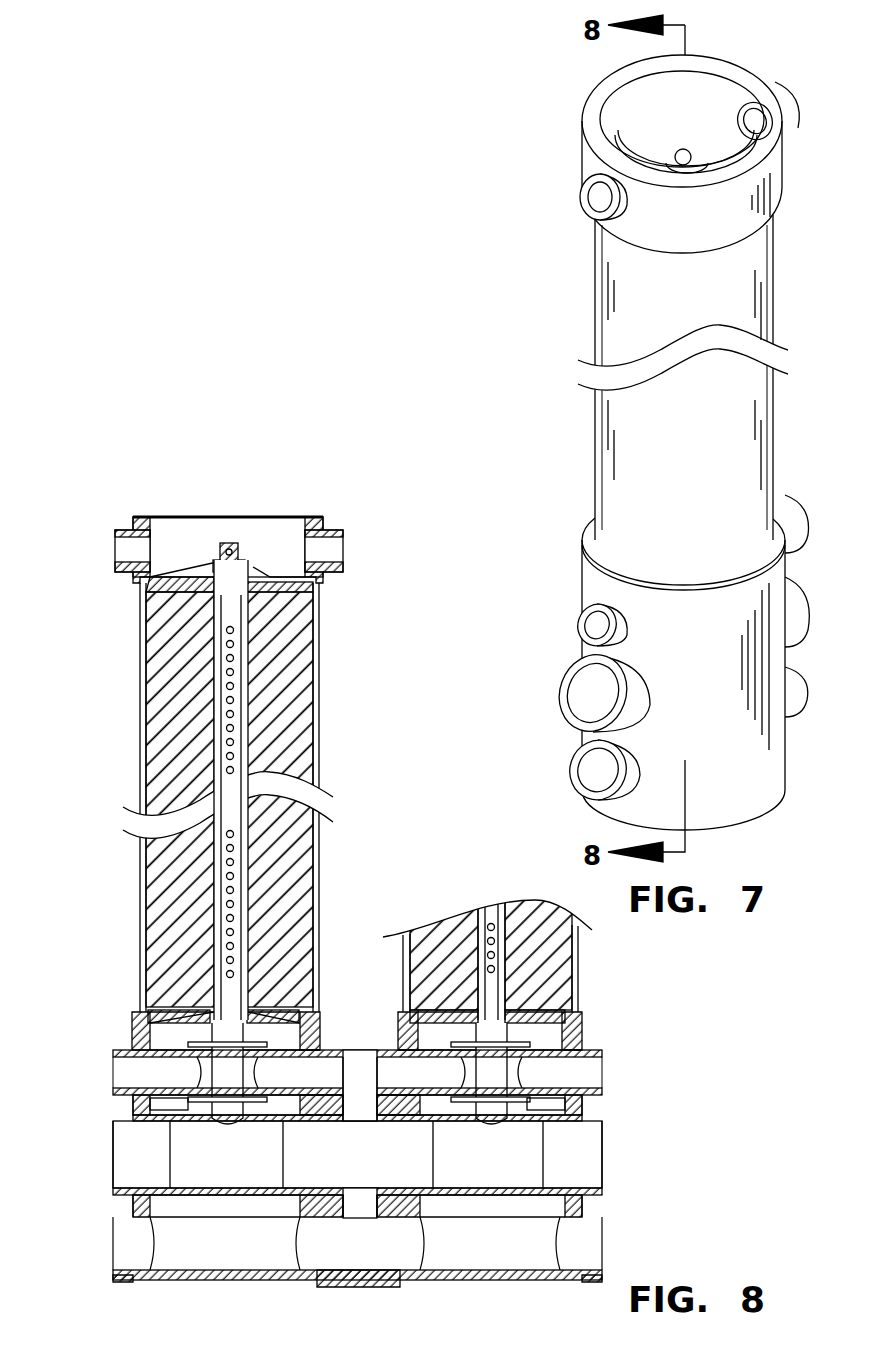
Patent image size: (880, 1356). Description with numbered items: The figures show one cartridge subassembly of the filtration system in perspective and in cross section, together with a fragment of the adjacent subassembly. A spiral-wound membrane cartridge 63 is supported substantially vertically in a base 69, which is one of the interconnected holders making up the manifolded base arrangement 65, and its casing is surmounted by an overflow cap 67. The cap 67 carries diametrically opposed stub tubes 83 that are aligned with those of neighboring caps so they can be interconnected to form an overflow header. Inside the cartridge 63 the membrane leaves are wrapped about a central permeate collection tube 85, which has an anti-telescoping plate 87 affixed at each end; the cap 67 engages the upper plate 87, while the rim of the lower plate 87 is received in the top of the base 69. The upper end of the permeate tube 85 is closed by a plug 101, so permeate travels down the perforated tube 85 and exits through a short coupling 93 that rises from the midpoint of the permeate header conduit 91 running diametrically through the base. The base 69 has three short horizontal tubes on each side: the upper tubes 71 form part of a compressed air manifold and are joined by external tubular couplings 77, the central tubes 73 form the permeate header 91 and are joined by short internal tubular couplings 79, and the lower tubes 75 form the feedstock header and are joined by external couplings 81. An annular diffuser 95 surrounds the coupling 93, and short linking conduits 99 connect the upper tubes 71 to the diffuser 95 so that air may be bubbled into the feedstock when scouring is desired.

In FIG. 7, the membrane cartridge 63 is at (778, 270).
In FIG. 8, the membrane cartridge 63 is at (319, 668).
In FIG. 8, the manifolded base arrangement 65 is at (341, 1151).
In FIG. 7, the overflow cap 67 is at (760, 72).
In FIG. 8, the overflow cap 67 is at (210, 517).
In FIG. 7, the base 69 is at (752, 755).
In FIG. 8, the base 69 is at (182, 1282).
In FIG. 7, the upper tube 71 is at (590, 604).
In FIG. 8, the upper tube 71 is at (592, 1052).
In FIG. 7, the central tube 73 is at (568, 660).
In FIG. 8, the central tube 73 is at (113, 1203).
In FIG. 7, the lower tube 75 is at (576, 745).
In FIG. 8, the lower tube 75 is at (113, 1285).
In FIG. 8, the tubular coupling 77 is at (360, 1050).
In FIG. 8, the short tubular coupling 79 is at (412, 1180).
In FIG. 8, the external coupling 81 is at (330, 1283).
In FIG. 7, the stub tube 83 is at (588, 178).
In FIG. 8, the stub tube 83 is at (342, 528).
In FIG. 8, the central permeate collection tube 85 is at (248, 730).
In FIG. 8, the anti-telescoping plate 87 is at (160, 598).
In FIG. 8, the permeate header conduit 91 is at (520, 1175).
In FIG. 8, the short coupling 93 is at (226, 1105).
In FIG. 8, the diffuser 95 is at (540, 1018).
In FIG. 8, the linking conduit 99 is at (585, 1098).
In FIG. 8, the plug 101 is at (250, 565).